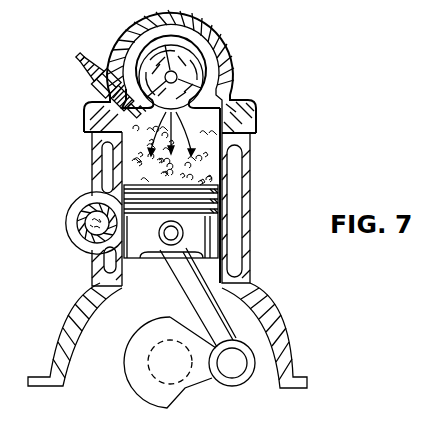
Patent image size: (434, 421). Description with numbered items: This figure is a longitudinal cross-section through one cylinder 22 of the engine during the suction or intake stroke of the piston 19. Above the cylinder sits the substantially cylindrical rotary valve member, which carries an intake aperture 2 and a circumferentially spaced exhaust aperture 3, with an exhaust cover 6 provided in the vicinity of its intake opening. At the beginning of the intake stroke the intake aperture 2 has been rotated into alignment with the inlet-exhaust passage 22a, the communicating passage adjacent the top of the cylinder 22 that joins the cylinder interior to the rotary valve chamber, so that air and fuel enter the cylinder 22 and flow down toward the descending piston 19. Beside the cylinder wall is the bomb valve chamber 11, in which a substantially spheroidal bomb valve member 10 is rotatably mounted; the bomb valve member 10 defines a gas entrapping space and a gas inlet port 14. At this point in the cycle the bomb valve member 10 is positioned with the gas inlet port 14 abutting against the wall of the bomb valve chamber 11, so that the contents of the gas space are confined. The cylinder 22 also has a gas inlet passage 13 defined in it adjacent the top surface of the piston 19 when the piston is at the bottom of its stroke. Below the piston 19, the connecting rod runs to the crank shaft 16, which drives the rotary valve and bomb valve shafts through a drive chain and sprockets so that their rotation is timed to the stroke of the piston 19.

The intake aperture 2 is at (232, 80).
The exhaust aperture 3 is at (130, 42).
The exhaust cover 6 is at (196, 52).
The bomb valve member 10 is at (100, 240).
The bomb valve chamber 11 is at (74, 218).
The gas inlet passage 13 is at (120, 280).
The gas inlet port 14 is at (104, 206).
The crank shaft 16 is at (154, 358).
The piston 19 is at (222, 232).
The cylinder 22 is at (222, 172).
The inlet-exhaust passage 22a is at (250, 142).